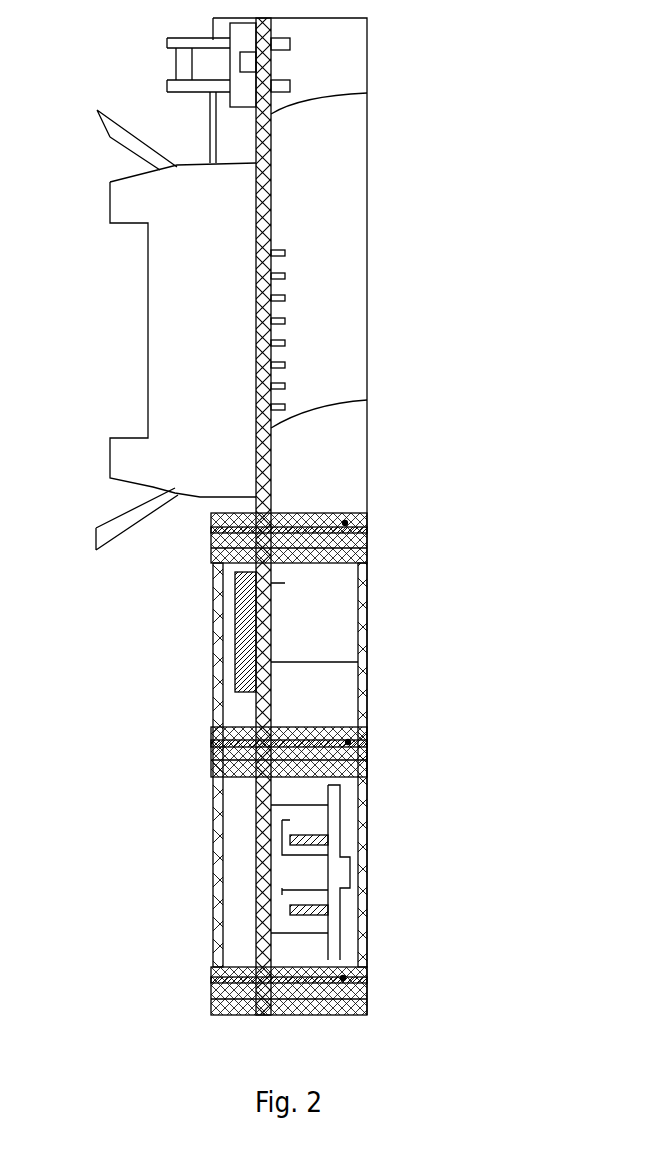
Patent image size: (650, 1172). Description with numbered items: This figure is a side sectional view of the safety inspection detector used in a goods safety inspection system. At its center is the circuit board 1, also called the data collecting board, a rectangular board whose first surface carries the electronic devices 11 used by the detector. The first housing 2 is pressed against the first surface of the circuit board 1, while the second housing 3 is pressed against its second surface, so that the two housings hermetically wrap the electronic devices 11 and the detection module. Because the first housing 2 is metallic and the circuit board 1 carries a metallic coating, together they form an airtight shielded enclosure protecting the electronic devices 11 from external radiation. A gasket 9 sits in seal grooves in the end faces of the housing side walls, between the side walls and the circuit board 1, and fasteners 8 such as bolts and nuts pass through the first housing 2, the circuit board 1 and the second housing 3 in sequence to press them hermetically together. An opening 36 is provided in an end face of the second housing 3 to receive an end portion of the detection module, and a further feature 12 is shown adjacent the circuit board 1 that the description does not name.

The circuit board 1 is at (258, 112).
The first housing 2 is at (215, 697).
The second housing 3 is at (367, 232).
The fasteners 8 is at (345, 523).
The gasket 9 is at (287, 733).
The electronic devices 11 is at (228, 617).
The teeth 12 is at (265, 422).
The opening 36 is at (310, 947).